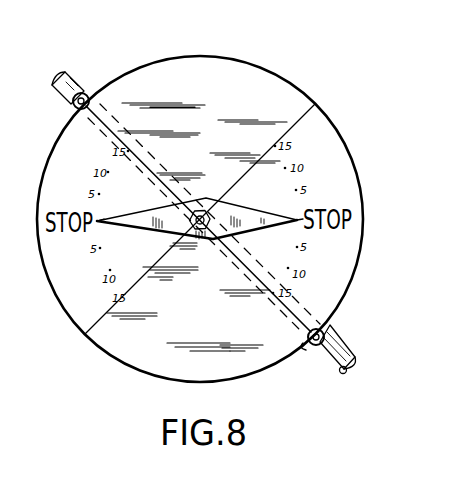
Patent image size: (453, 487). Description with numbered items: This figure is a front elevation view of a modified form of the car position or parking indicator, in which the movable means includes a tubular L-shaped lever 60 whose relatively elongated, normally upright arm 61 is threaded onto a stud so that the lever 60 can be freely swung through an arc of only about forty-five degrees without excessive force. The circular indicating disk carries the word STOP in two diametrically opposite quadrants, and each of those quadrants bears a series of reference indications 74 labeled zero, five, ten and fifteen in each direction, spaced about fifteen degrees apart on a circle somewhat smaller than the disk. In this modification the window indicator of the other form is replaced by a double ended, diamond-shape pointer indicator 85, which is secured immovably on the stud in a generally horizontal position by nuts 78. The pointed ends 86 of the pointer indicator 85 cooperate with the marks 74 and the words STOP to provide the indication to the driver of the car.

The L-shaped lever 60 is at (353, 347).
The upright arm 61 is at (338, 372).
The reference indications 74 is at (288, 131).
The nuts 78 is at (208, 213).
The pointer indicator 85 is at (212, 237).
The pointed ends 86 is at (97, 223).